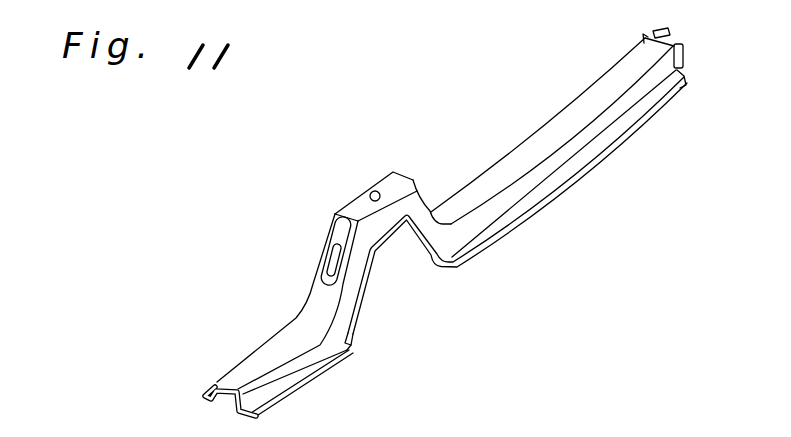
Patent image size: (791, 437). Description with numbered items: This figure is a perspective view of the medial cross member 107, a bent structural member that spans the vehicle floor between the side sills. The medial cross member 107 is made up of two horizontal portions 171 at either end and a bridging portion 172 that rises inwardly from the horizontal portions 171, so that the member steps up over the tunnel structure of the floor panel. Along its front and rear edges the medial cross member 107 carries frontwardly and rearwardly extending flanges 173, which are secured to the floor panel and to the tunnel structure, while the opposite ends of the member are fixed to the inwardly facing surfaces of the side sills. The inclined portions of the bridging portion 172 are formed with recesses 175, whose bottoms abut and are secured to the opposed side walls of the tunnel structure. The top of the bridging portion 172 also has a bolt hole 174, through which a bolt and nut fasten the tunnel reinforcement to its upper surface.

The medial cross member 107 is at (346, 209).
The horizontal portion 171 is at (582, 96).
The bridging portion 172 is at (413, 178).
The flange 173 is at (391, 232).
The bolt hole 174 is at (373, 191).
The recess 175 is at (331, 240).